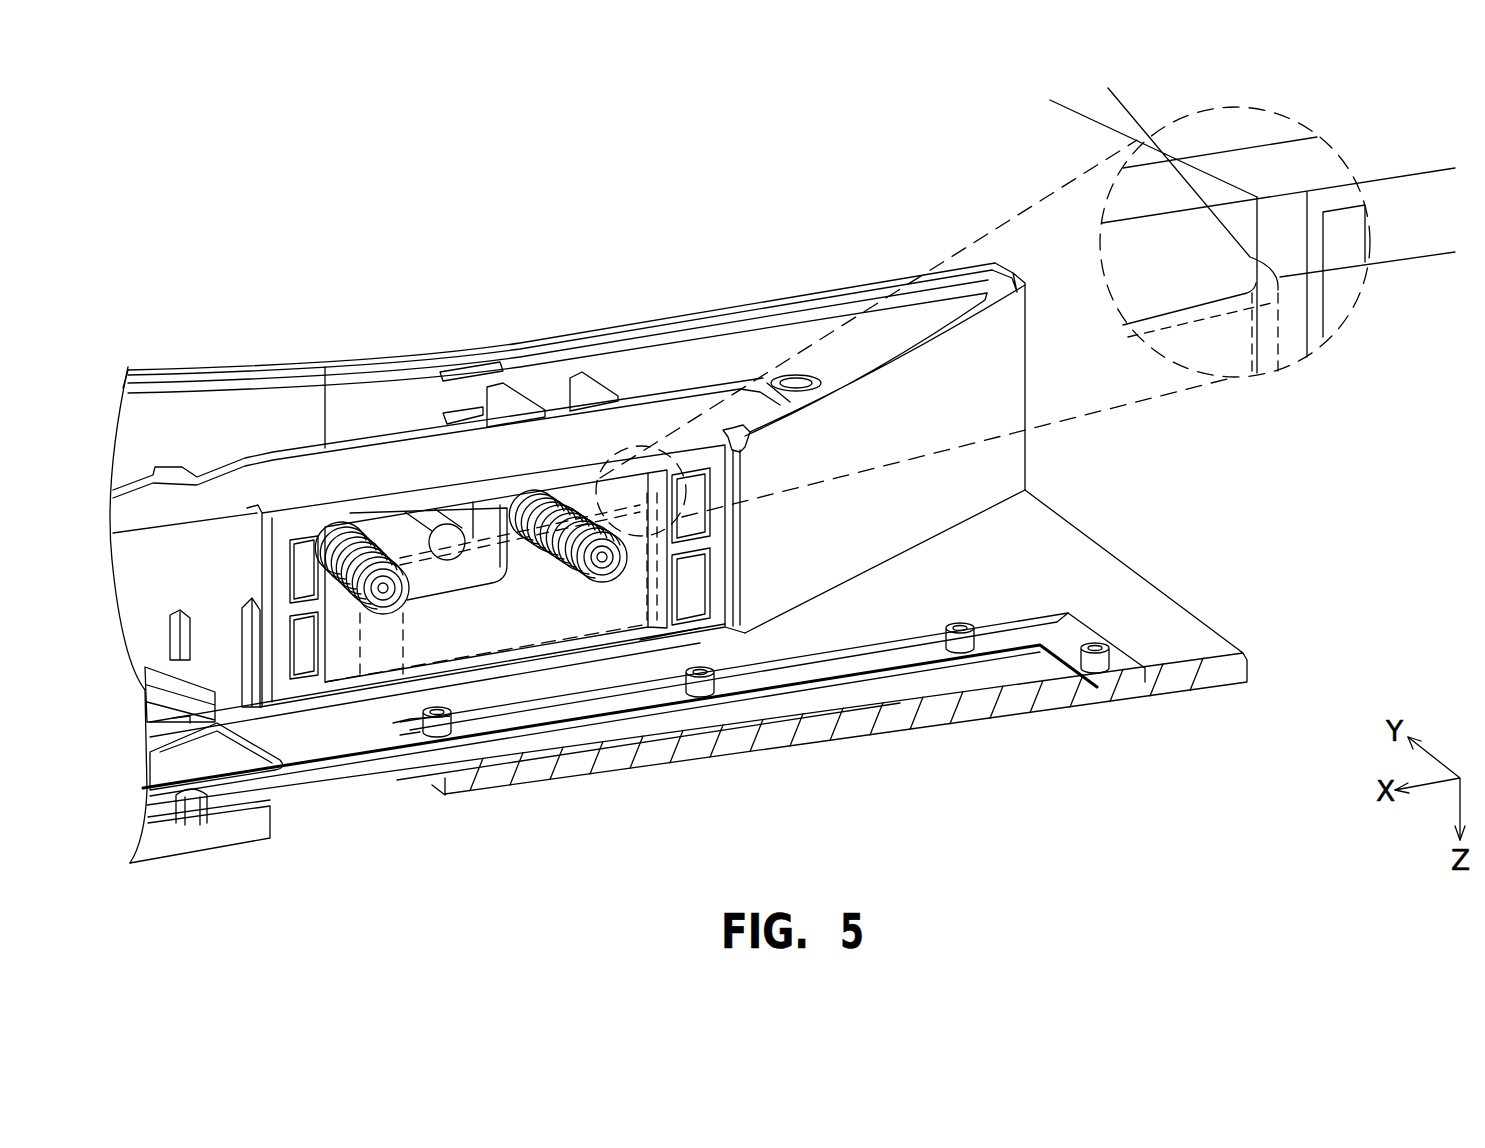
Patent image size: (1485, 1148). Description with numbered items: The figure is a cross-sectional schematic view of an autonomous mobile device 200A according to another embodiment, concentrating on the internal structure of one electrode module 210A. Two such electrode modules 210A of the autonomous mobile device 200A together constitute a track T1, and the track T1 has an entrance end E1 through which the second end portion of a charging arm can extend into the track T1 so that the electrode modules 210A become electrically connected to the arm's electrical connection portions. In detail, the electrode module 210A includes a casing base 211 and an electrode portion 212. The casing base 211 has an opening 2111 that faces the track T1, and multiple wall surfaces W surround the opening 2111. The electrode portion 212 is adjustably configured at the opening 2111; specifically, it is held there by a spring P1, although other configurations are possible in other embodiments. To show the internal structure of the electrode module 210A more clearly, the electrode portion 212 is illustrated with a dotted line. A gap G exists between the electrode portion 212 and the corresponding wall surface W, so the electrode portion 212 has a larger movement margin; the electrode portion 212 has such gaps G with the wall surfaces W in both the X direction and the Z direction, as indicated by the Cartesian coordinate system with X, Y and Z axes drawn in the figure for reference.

The autonomous mobile device 200A is at (203, 196).
The electrode module 210A is at (195, 56).
The casing base 211 is at (477, 495).
The opening 2111 is at (573, 682).
The electrode portion 212 is at (474, 672).
The spring P1 is at (556, 500).
The wall surface W is at (373, 537).
The track T1 is at (658, 664).
The entrance end E1 is at (1213, 636).
The gap G is at (1121, 117).